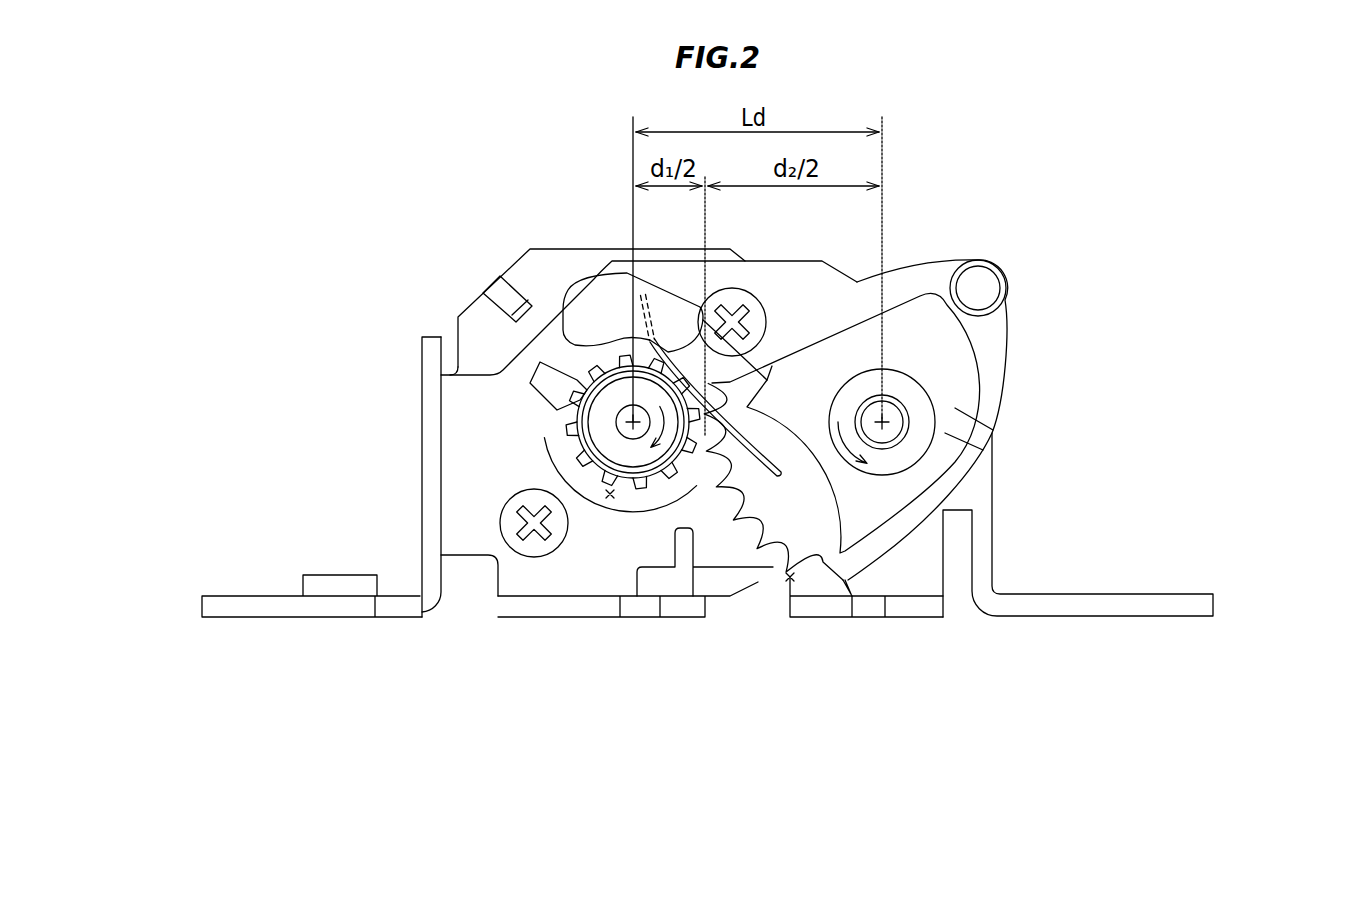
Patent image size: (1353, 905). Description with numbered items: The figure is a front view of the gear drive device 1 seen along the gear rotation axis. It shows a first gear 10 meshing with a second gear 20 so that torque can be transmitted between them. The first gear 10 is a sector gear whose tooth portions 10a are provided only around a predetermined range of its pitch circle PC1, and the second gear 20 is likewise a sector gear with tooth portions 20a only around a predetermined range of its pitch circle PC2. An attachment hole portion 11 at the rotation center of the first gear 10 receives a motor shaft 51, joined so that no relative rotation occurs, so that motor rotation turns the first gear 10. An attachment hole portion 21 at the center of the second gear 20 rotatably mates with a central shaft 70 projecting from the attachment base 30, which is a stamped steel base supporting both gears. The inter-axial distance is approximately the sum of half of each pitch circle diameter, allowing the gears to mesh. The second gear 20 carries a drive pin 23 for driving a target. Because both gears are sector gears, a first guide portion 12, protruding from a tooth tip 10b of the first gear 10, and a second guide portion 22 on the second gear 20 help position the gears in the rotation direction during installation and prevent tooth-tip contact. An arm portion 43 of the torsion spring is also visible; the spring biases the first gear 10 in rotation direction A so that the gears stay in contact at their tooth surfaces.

The gear drive device 1 is at (965, 188).
The first gear 10 is at (557, 480).
The tooth portions 10a is at (610, 494).
The tooth tip 10b is at (585, 450).
The attachment hole portion 11 is at (617, 422).
The first guide portion 12 is at (547, 378).
The second gear 20 is at (880, 540).
The tooth portions 20a is at (768, 552).
The attachment hole portion 21 is at (903, 410).
The second guide portion 22 is at (836, 592).
The drive pin 23 is at (986, 272).
The attachment base 30 is at (982, 488).
The arm portion 43 is at (652, 301).
The motor shaft 51 is at (617, 414).
The central shaft 70 is at (870, 412).
The direction A is at (664, 457).
The pitch circle PC1 is at (612, 498).
The pitch circle PC2 is at (790, 580).